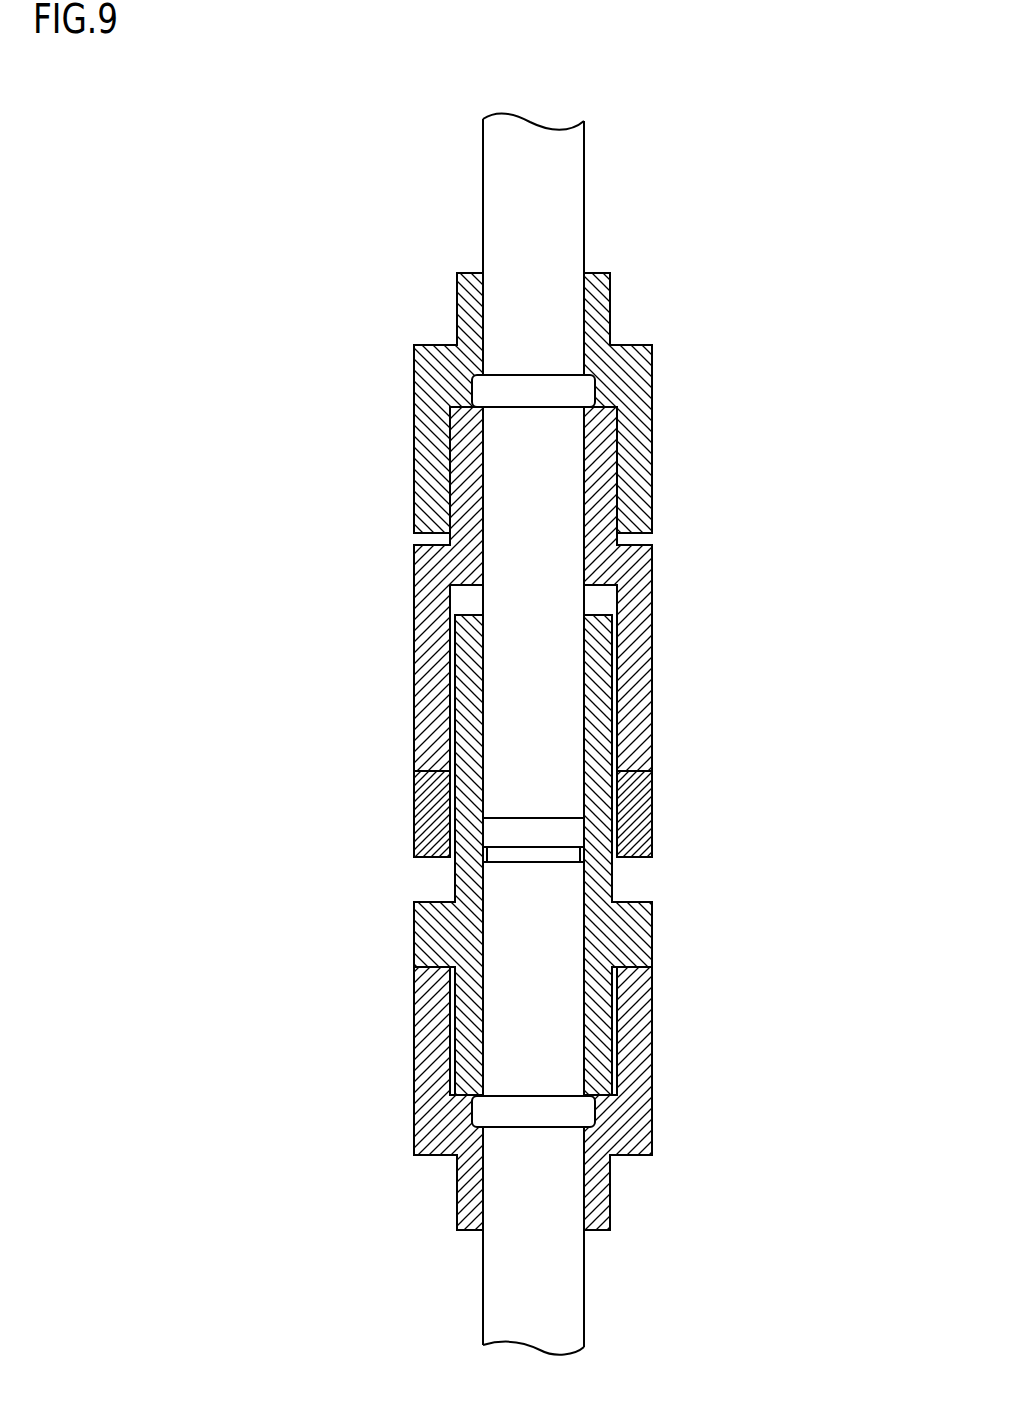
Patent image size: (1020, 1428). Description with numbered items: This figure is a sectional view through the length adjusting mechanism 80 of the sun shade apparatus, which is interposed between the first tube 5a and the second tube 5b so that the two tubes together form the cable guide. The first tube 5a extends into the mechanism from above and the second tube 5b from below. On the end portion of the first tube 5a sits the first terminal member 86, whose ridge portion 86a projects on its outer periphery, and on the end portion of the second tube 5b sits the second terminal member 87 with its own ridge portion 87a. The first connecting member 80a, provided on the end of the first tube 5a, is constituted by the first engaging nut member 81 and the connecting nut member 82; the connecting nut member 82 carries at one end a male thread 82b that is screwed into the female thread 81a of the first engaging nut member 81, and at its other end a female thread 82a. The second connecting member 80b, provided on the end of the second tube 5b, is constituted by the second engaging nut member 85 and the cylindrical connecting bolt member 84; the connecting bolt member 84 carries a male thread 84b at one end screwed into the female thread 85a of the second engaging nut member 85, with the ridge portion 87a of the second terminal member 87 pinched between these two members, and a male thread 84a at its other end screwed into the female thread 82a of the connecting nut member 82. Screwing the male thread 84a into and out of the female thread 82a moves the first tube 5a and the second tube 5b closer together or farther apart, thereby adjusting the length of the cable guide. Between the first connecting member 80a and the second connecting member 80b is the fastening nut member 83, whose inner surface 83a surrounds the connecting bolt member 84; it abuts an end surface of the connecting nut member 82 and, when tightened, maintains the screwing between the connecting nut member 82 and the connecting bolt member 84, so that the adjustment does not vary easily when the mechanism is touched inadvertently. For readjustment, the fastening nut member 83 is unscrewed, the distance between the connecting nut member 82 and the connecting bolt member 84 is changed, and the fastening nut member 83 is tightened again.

The first tube 5a is at (517, 198).
The second tube 5b is at (515, 1277).
The length adjusting mechanism 80 is at (414, 312).
The first connecting member 80a is at (803, 397).
The second connecting member 80b is at (803, 863).
The first engaging nut member 81 is at (632, 381).
The female thread 81a is at (453, 438).
The connecting nut member 82 is at (652, 634).
The female thread 82a is at (450, 654).
The male thread 82b is at (458, 479).
The fastening nut member 83 is at (650, 808).
The inner surface of ring member 83a is at (450, 814).
The connecting bolt member 84 is at (608, 872).
The male thread 84a is at (455, 706).
The male thread 84b is at (457, 1045).
The second engaging nut member 85 is at (635, 1063).
The female thread 85a is at (453, 972).
The first terminal member 86 is at (520, 503).
The ridge portion 86a is at (490, 389).
The second terminal member 87 is at (533, 1002).
The ridge portion 87a is at (582, 1113).